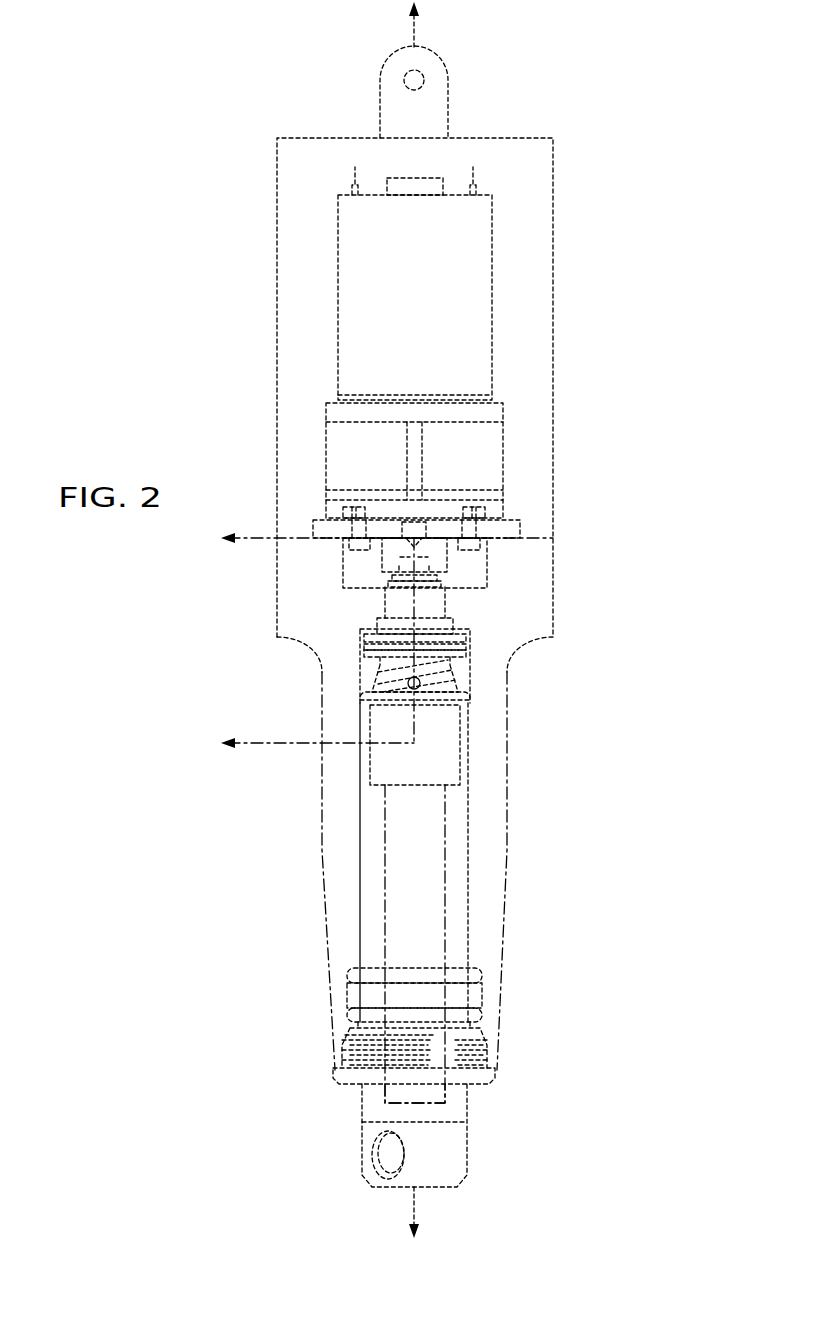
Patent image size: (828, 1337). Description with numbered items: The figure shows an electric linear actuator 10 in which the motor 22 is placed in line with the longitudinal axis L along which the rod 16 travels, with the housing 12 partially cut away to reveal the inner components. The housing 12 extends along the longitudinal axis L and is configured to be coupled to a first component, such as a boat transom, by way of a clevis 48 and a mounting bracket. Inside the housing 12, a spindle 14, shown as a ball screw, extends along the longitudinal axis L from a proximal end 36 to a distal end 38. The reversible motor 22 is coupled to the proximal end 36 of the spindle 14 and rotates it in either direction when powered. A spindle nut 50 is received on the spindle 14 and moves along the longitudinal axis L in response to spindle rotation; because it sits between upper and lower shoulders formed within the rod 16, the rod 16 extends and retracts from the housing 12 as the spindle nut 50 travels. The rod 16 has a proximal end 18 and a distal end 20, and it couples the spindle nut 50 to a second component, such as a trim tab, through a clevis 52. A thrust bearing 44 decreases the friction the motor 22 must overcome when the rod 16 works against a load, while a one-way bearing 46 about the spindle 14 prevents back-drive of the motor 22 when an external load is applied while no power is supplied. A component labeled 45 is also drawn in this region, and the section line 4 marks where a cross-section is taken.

The electric linear actuator 10 is at (655, 346).
The housing 12 is at (277, 373).
The spindle 14 is at (385, 905).
The rod 16 is at (468, 885).
The proximal end 18 is at (358, 686).
The distal end 20 is at (384, 1198).
The motor 22 is at (492, 297).
The proximal end 36 is at (428, 546).
The distal end 38 is at (438, 1113).
The thrust bearing 44 is at (465, 642).
The collar 45 is at (360, 619).
The one-way bearing 46 is at (445, 599).
The clevis 48 is at (448, 108).
The spindle nut 50 is at (462, 745).
The clevis 52 is at (372, 1160).
The line 4- 4 is at (378, 640).
The longitudinal axis L is at (418, 1207).